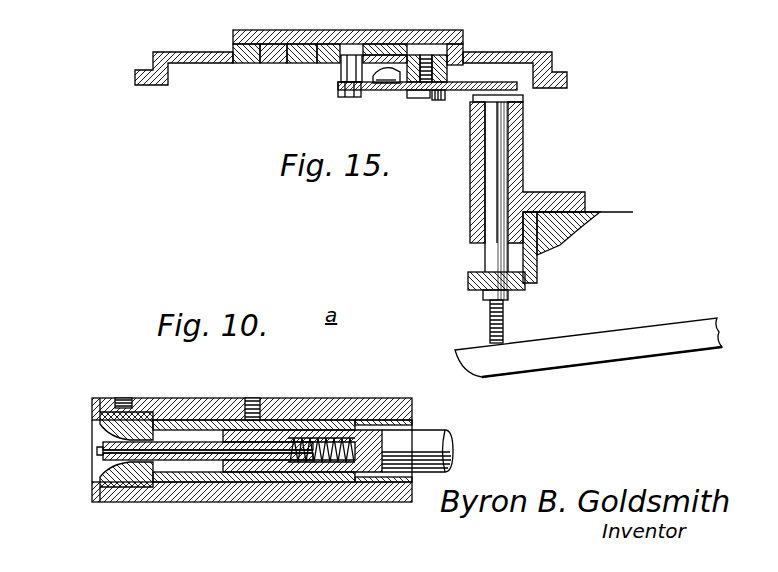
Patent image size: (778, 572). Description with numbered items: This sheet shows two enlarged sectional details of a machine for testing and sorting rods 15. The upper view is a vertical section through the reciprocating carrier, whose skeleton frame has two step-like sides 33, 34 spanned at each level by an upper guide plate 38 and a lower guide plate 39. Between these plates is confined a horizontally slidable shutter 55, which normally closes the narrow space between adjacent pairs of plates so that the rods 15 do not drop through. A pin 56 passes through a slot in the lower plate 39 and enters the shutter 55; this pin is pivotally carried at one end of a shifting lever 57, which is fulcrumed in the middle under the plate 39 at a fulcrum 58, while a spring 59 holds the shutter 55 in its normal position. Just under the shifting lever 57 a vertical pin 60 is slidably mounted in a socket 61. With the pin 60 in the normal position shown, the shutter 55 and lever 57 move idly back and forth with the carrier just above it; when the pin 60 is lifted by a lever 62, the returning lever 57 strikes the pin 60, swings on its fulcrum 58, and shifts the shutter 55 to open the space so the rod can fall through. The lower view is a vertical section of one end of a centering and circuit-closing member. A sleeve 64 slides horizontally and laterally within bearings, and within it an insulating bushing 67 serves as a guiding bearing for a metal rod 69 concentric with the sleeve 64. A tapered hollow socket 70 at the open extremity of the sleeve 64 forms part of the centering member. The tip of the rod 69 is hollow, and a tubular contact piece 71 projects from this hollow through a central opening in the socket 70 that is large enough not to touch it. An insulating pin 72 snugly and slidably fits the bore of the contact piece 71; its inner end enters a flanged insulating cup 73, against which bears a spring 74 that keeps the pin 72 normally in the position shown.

In FIG. 15, the rods 15 is at (348, 22).
In FIG. 15, the side of skeleton frame 33 is at (545, 53).
In FIG. 15, the side of skeleton frame 34 is at (412, 31).
In FIG. 15, the upper guide plate 38 is at (420, 33).
In FIG. 15, the lower guide plate 39 is at (273, 65).
In FIG. 15, the shutter 55 is at (320, 52).
In FIG. 15, the pin 56 is at (348, 68).
In FIG. 15, the shifting lever 57 is at (483, 87).
In FIG. 15, the fulcrum 58 is at (430, 90).
In FIG. 15, the spring 59 is at (398, 68).
In FIG. 15, the vertical pin 60 is at (490, 180).
In FIG. 15, the socket 61 is at (523, 155).
In FIG. 15, the lever 62 is at (630, 335).
In FIG. 10a, the sleeve 64 is at (212, 403).
In FIG. 10a, the insulating bushing 67 is at (297, 420).
In FIG. 10a, the metal rod 69 is at (427, 440).
In FIG. 10a, the tapered hollow socket 70 is at (102, 420).
In FIG. 10a, the tubular contact piece 71 is at (172, 437).
In FIG. 10a, the insulating pin 72 is at (97, 455).
In FIG. 10a, the insulating cup 73 is at (280, 458).
In FIG. 10a, the spring 74 is at (337, 460).